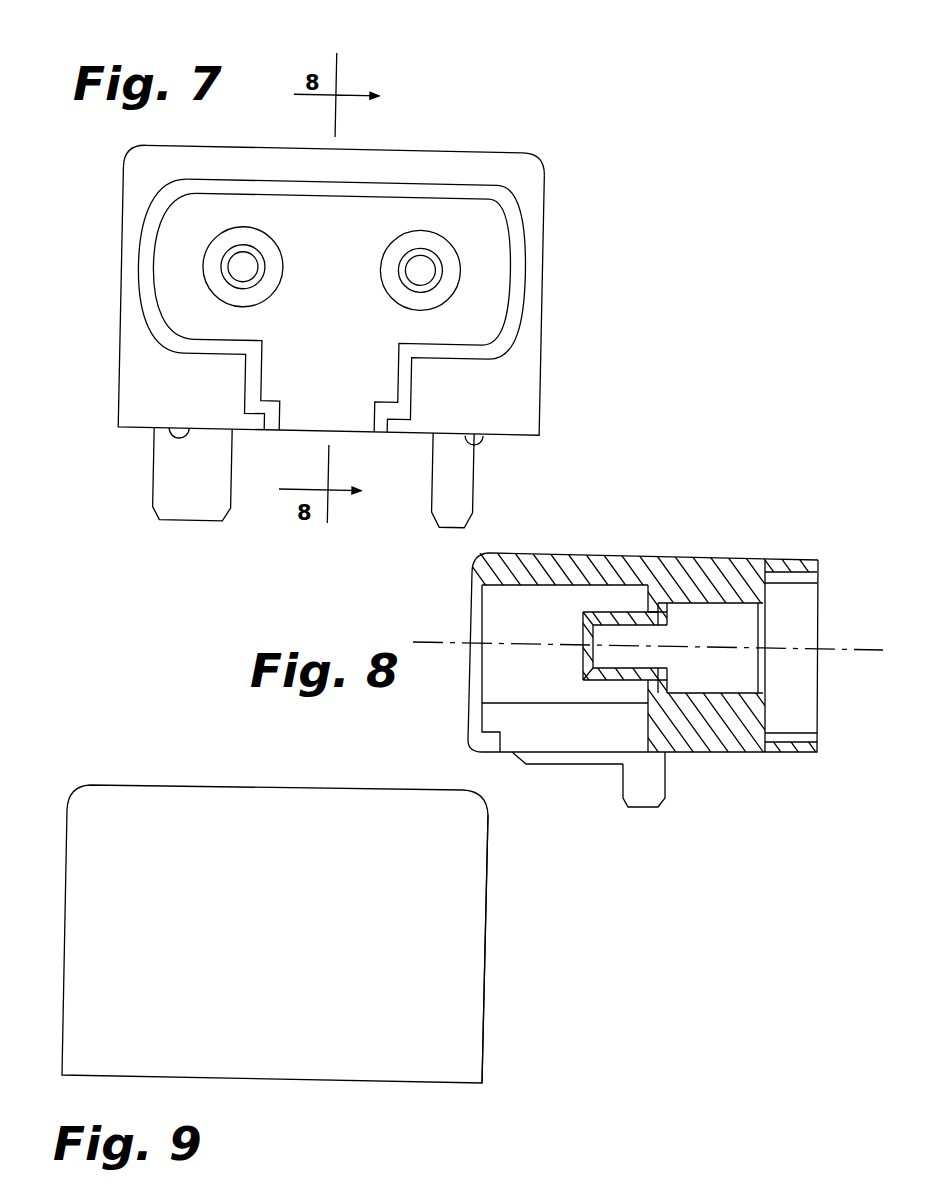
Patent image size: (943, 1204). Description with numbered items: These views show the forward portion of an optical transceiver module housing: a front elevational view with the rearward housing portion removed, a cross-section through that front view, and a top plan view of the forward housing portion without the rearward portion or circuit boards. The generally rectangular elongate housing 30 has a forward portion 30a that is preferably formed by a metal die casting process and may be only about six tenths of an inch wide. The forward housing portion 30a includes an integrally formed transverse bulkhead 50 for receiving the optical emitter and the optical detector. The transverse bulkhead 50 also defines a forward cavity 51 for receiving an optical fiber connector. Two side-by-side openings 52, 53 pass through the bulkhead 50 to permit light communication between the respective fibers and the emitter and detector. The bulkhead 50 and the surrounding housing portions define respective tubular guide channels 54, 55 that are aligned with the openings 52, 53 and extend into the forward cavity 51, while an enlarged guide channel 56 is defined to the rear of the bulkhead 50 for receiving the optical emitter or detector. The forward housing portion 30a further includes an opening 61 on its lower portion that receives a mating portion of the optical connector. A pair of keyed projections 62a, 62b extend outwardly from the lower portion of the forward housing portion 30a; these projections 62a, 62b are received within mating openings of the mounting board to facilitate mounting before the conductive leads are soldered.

In FIG. 7, the housing 30 is at (515, 120).
In FIG. 8, the housing 30 is at (670, 525).
In FIG. 9, the housing 30 is at (170, 772).
In FIG. 7, the forward housing portion 30a is at (537, 158).
In FIG. 8, the forward housing portion 30a is at (757, 560).
In FIG. 9, the forward housing portion 30a is at (487, 990).
In FIG. 7, the transverse bulkhead 50 is at (193, 310).
In FIG. 8, the transverse bulkhead 50 is at (657, 617).
In FIG. 8, the forward cavity 51 is at (492, 677).
In FIG. 7, the opening 52 is at (427, 263).
In FIG. 8, the opening 52 is at (660, 657).
In FIG. 7, the opening 53 is at (238, 265).
In FIG. 7, the tubular guide channel 54 is at (423, 272).
In FIG. 8, the tubular guide channel 54 is at (617, 675).
In FIG. 7, the tubular guide channel 55 is at (253, 252).
In FIG. 8, the enlarged guide channel 56 is at (723, 675).
In FIG. 8, the opening 61 is at (567, 720).
In FIG. 7, the keyed projection 62a is at (463, 495).
In FIG. 8, the keyed projection 62a is at (653, 787).
In FIG. 7, the keyed projection 62b is at (173, 455).